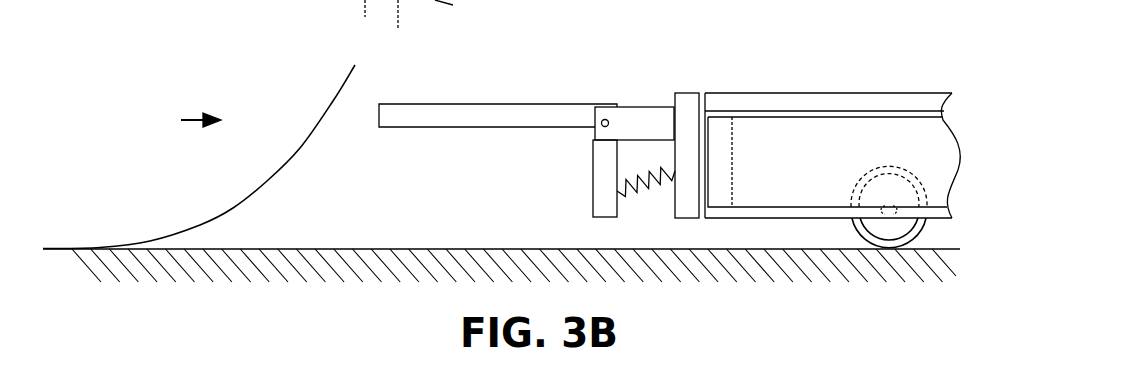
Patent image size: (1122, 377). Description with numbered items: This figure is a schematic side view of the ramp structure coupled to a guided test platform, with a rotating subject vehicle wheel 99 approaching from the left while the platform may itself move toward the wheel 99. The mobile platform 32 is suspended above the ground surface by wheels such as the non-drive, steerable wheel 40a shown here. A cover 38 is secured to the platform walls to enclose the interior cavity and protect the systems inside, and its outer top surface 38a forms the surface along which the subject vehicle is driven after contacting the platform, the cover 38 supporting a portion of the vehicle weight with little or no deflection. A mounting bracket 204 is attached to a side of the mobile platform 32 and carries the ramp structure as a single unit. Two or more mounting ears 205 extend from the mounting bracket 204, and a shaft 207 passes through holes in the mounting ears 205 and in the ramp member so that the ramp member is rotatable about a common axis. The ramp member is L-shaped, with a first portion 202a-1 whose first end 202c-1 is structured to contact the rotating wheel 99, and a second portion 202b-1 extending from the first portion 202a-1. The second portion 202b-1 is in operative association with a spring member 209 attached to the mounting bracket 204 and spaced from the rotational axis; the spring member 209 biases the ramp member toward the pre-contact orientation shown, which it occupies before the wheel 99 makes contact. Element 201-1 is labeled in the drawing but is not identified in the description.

The rotating subject vehicle wheel 99 is at (213, 218).
The mobile platform 32 is at (891, 92).
The cover 38 is at (830, 102).
The cover outer surface 38a is at (773, 92).
The wheel 40a is at (886, 235).
The mounting bracket 204 is at (688, 205).
The mounting ear 205 is at (636, 124).
The shaft 207 is at (600, 123).
The spring member 209 is at (643, 200).
The ramp member first portion 202a-1 is at (411, 117).
The ramp member second portion 202b-1 is at (602, 193).
The ramp member first end 202c-1 is at (328, 14).
The bumper assembly 201-1 is at (485, 3).